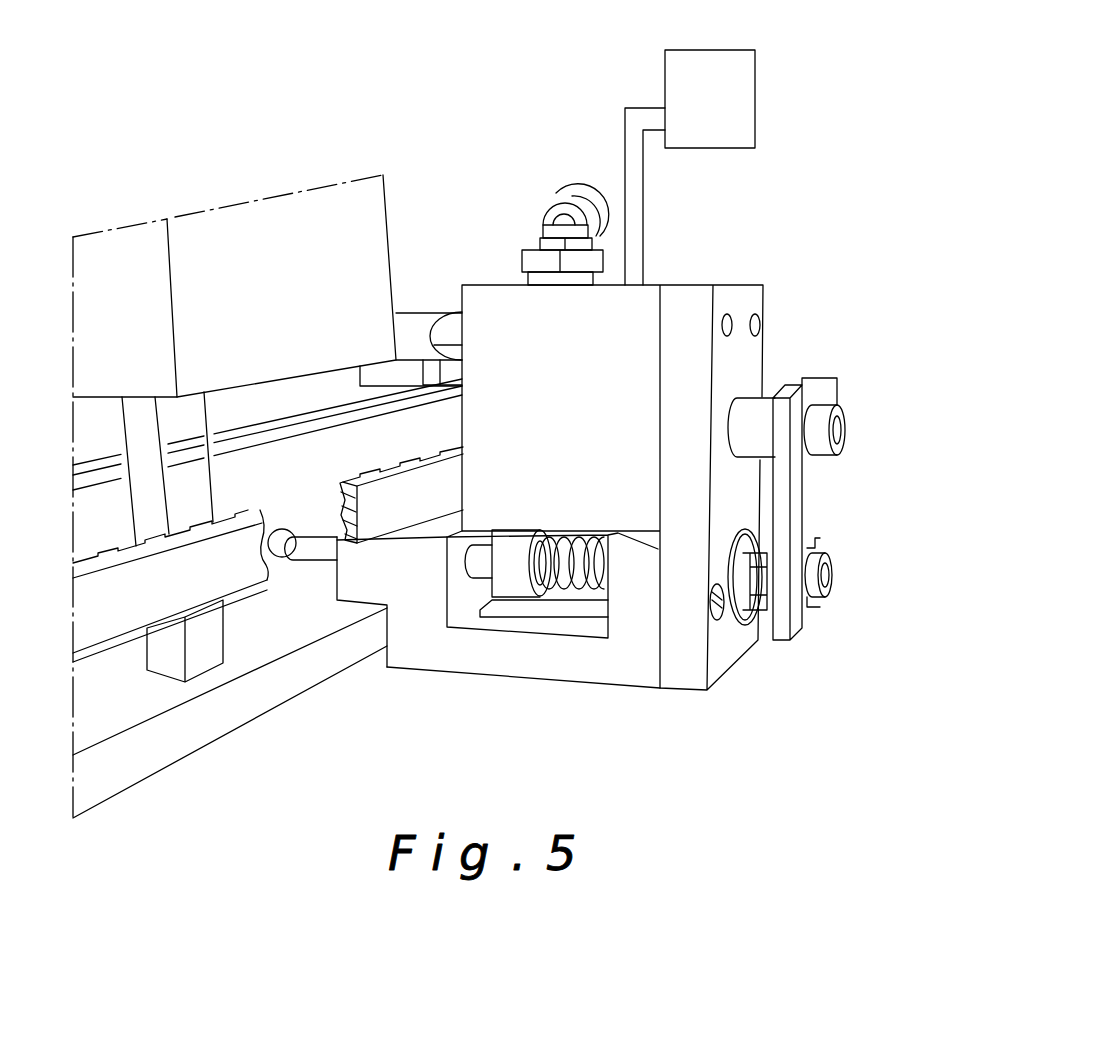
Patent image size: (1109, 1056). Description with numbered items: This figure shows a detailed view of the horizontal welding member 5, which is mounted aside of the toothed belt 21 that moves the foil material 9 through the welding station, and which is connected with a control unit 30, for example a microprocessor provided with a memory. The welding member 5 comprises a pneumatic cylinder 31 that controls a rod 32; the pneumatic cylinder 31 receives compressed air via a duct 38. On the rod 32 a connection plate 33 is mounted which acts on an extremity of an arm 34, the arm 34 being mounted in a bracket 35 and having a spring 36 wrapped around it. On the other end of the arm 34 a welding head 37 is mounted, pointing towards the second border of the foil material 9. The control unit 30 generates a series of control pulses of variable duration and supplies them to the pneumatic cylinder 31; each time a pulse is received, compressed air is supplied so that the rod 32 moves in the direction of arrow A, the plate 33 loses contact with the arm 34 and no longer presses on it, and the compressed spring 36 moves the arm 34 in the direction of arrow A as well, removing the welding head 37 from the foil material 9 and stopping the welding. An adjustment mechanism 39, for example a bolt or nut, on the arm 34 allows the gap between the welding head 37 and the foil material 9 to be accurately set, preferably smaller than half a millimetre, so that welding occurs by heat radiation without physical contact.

The horizontal welding member 5 is at (852, 391).
The foil material 9 is at (313, 527).
The toothed belt 21 is at (103, 613).
The control unit 30 is at (733, 97).
The pneumatic cylinder 31 is at (586, 398).
The rod 32 is at (758, 418).
The connection plate 33 is at (815, 522).
The arm 34 is at (483, 567).
The bracket 35 is at (583, 655).
The spring 36 is at (545, 600).
The welding head 37 is at (291, 545).
The duct 38 is at (555, 215).
The adjustment mechanism 39 is at (757, 627).
The arrow A is at (848, 432).